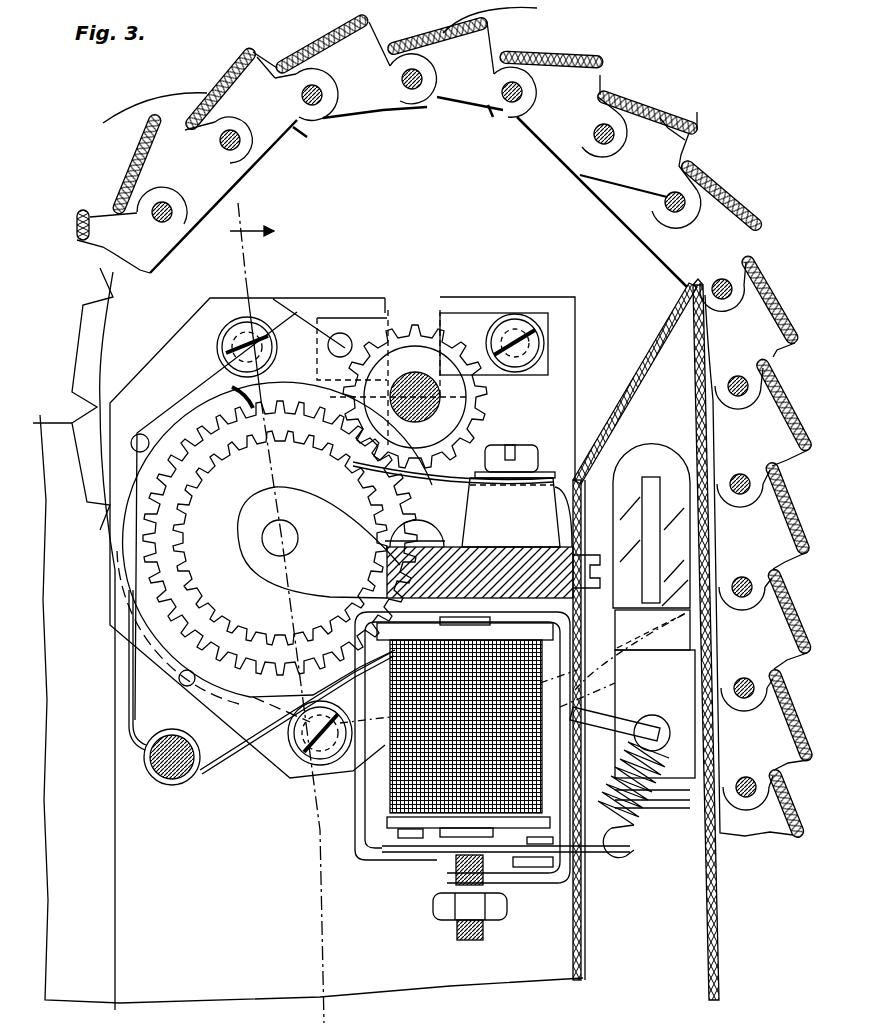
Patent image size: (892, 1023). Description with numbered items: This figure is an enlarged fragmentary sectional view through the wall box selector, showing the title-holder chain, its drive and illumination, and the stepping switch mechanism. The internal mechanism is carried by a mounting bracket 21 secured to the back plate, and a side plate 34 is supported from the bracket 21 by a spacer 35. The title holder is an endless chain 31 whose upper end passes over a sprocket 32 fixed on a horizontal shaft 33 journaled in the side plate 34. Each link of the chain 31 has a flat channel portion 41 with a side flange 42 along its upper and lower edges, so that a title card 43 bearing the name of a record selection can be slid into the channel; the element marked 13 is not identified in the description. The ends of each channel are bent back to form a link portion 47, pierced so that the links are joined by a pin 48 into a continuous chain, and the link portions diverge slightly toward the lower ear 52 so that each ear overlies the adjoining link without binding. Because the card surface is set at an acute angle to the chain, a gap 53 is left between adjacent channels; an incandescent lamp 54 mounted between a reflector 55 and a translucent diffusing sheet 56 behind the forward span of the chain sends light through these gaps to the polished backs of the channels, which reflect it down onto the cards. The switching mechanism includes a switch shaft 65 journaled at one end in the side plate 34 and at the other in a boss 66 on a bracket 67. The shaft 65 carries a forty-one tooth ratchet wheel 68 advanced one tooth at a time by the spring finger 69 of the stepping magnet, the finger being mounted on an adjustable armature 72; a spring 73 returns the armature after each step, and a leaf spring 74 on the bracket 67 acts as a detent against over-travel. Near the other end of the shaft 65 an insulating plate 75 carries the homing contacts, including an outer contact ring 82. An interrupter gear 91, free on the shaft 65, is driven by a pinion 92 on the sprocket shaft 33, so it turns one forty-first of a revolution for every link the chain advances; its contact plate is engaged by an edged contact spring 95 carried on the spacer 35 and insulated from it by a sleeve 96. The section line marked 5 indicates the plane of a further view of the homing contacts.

The pivot rod 13 is at (140, 126).
The mounting bracket 21 is at (65, 566).
The endless chain 31 is at (298, 47).
The sprocket 32 is at (355, 198).
The horizontal shaft 33 is at (445, 397).
The side plate 34 is at (538, 298).
The spacer 35 is at (173, 782).
The flat channel portion 41 is at (668, 128).
The side flange 42 is at (605, 98).
The title card 43 is at (640, 112).
The link portion 47 is at (227, 162).
The pin 48 is at (172, 215).
The lower ear 52 is at (623, 145).
The gap 53 is at (782, 358).
The incandescent lamp 54 is at (642, 455).
The reflector 55 is at (642, 372).
The translucent diffusing sheet 56 is at (706, 938).
The switch shaft 65 is at (270, 534).
The boss 66 is at (267, 567).
The bracket 67 is at (494, 560).
The ratchet wheel 68 is at (326, 445).
The spring finger 69 is at (395, 787).
The adjustable armature 72 is at (417, 853).
The spring 73 is at (646, 814).
The leaf spring 74 is at (440, 475).
The insulating plate 75 is at (172, 372).
The outer contact ring 82 is at (162, 426).
The interrupter gear 91 is at (236, 391).
The pinion 92 is at (432, 322).
The edged contact spring 95 is at (133, 698).
The sleeve 96 is at (143, 761).
The section line 5 is at (307, 613).